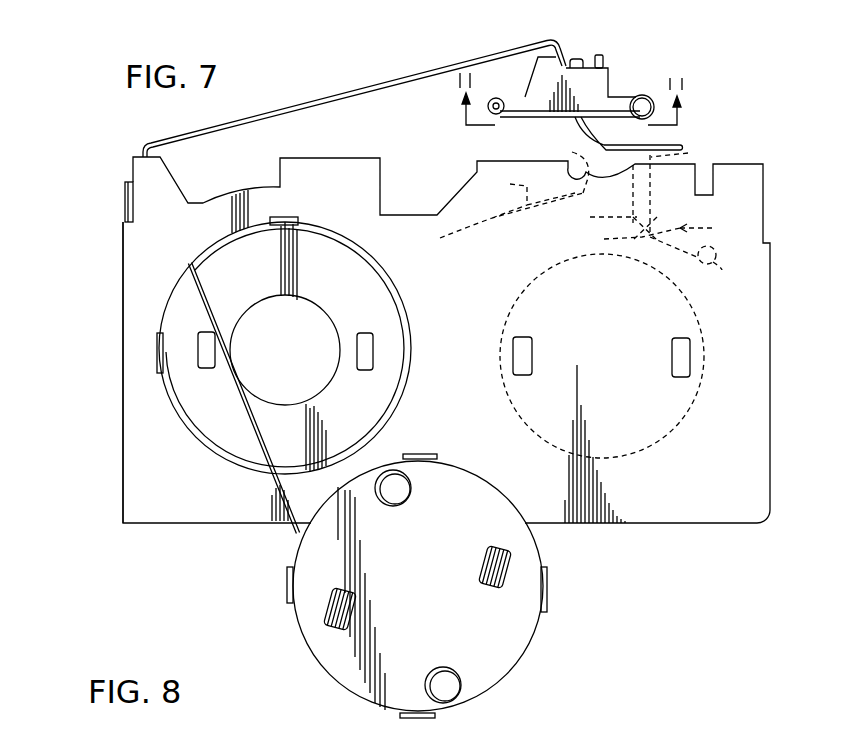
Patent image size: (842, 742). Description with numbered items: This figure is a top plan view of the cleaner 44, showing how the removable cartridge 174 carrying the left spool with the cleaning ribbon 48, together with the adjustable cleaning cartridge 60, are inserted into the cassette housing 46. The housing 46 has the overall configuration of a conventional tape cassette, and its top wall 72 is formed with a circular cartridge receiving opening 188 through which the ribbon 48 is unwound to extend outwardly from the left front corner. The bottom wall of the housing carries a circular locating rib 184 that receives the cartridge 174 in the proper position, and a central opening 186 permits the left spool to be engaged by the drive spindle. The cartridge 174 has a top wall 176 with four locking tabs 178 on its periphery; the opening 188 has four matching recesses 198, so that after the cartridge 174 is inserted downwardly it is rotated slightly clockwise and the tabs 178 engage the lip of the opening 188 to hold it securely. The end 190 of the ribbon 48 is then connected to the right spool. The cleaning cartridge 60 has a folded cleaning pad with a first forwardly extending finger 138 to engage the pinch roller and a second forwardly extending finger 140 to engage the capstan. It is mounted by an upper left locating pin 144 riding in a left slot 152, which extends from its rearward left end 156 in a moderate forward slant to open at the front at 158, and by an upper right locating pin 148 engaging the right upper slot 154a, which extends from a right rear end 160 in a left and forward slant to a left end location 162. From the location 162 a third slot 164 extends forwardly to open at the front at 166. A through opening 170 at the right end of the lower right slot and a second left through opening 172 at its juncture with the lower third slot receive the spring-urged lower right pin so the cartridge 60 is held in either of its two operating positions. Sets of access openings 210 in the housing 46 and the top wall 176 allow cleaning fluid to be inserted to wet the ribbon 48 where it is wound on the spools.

In FIG. 7, the cleaner 44 is at (100, 222).
In FIG. 7, the cassette housing 46 is at (116, 255).
In FIG. 7, the cleaning ribbon 48 is at (363, 86).
In FIG. 7, the cleaning cartridge 60 is at (586, 75).
In FIG. 7, the top wall 72 is at (472, 315).
In FIG. 7, the first forwardly extending finger 138 is at (599, 54).
In FIG. 7, the second forwardly extending finger 140 is at (575, 58).
In FIG. 8, the second forwardly extending finger 140 is at (220, 741).
In FIG. 7, the upper left locating pin 144 is at (501, 114).
In FIG. 7, the upper right locating pin 148 is at (638, 96).
In FIG. 7, the left slot 152 is at (528, 189).
In FIG. 7, the right upper slot 154a is at (720, 230).
In FIG. 7, the rearward left end 156 is at (495, 221).
In FIG. 7, the front opening of left slots 158 is at (565, 166).
In FIG. 7, the right rear end 160 is at (708, 265).
In FIG. 7, the left end location 162 is at (627, 239).
In FIG. 7, the third slot 164 is at (653, 188).
In FIG. 7, the front opening of third slots 166 is at (691, 187).
In FIG. 7, the through opening 170 is at (722, 270).
In FIG. 7, the second left through opening 172 is at (597, 217).
In FIG. 7, the removable cartridge 174 is at (446, 590).
In FIG. 7, the top wall 176 is at (432, 574).
In FIG. 7, the locking tab 178 is at (548, 575).
In FIG. 7, the circular locating rib 184 is at (381, 270).
In FIG. 7, the central opening 186 is at (311, 310).
In FIG. 7, the cartridge receiving opening 188 is at (175, 296).
In FIG. 7, the ribbon end 190 is at (680, 144).
In FIG. 7, the recess 198 is at (304, 220).
In FIG. 7, the access opening 210 is at (360, 352).